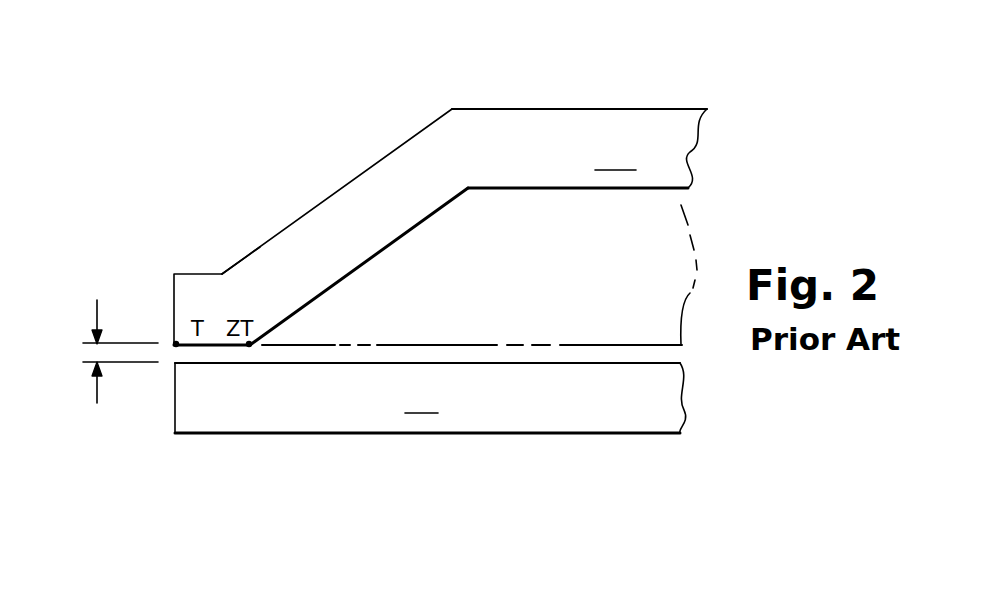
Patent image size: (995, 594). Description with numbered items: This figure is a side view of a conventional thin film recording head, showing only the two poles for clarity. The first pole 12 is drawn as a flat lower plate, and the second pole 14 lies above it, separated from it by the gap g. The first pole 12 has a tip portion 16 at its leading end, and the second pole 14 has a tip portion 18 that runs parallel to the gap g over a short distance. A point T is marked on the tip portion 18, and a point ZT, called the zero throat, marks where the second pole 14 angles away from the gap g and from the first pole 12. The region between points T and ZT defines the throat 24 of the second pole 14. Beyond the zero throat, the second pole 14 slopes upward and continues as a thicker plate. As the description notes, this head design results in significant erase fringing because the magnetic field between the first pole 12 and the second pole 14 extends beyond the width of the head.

The first pole 12 is at (533, 433).
The second pole 14 is at (565, 110).
The tip portion of first pole 16 is at (175, 407).
The tip portion of second pole 18 is at (174, 289).
The throat 24 is at (218, 305).
The gap g is at (88, 355).